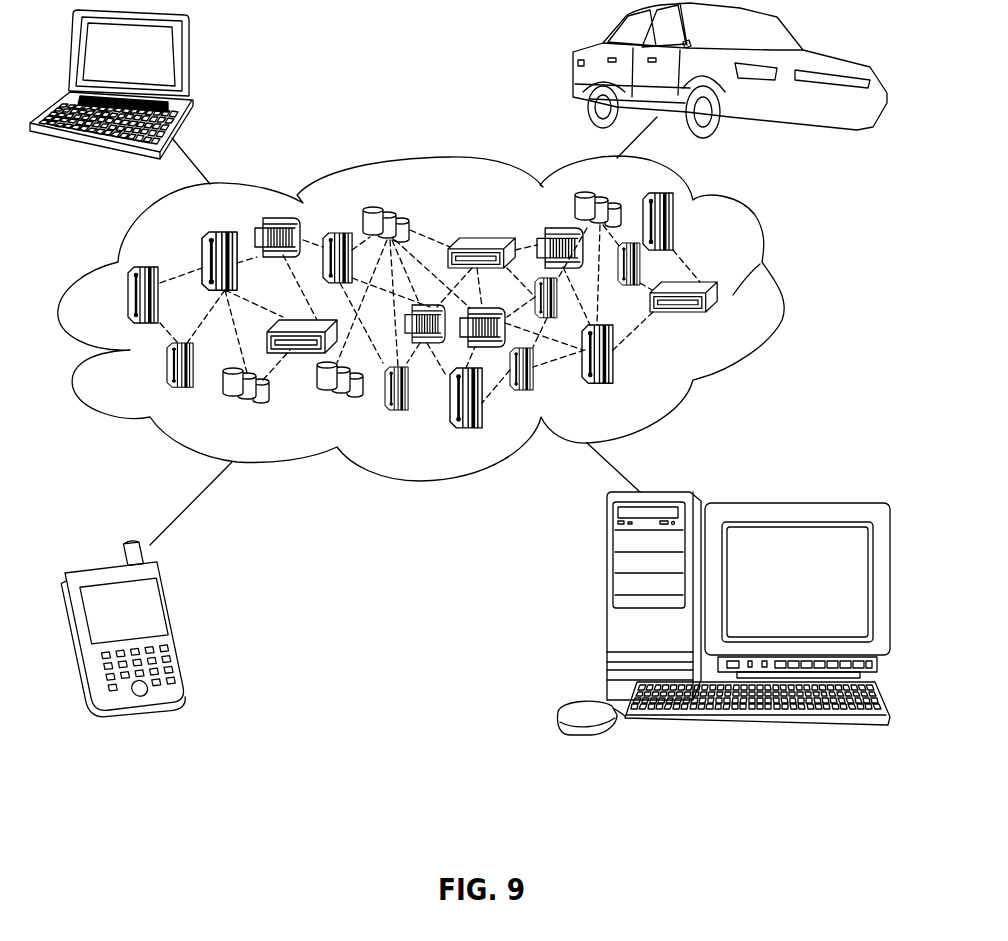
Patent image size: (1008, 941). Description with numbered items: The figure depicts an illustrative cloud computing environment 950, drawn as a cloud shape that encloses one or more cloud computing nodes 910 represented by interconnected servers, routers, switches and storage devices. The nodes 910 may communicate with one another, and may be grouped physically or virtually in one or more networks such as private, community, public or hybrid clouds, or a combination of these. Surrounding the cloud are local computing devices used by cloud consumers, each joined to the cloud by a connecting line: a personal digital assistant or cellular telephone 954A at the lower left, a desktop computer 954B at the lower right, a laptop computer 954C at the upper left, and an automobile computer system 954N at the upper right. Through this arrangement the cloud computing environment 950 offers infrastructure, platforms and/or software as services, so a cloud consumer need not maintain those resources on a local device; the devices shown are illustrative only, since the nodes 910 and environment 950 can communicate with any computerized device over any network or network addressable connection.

The cloud computing nodes 910 is at (737, 317).
The cloud computing environment 950 is at (762, 262).
The personal digital assistant or cellular telephone 954A is at (180, 623).
The desktop computer 954B is at (607, 603).
The laptop computer 954C is at (188, 58).
The automobile computer system 954N is at (580, 63).